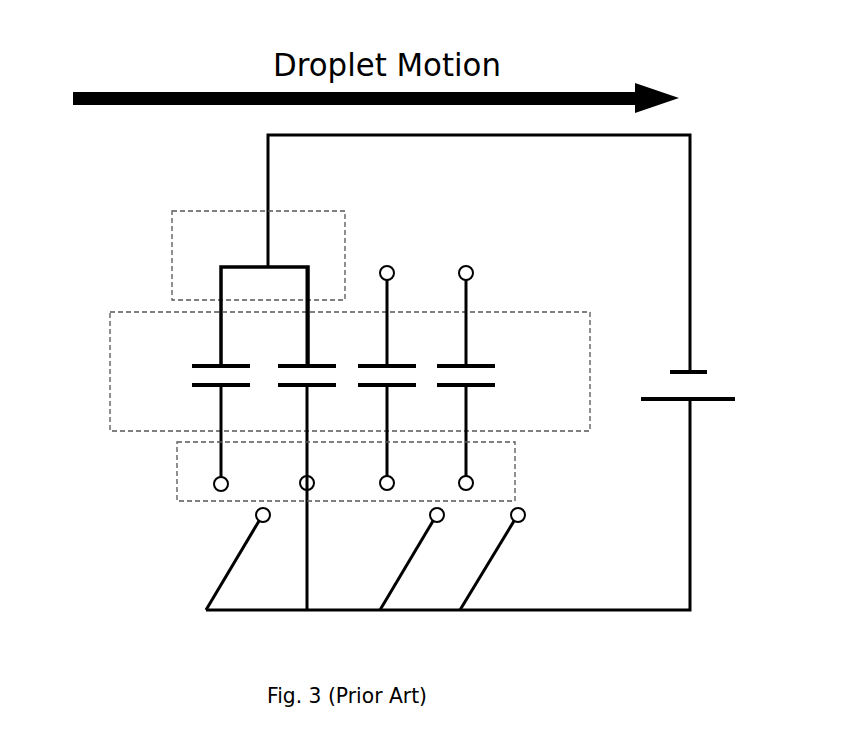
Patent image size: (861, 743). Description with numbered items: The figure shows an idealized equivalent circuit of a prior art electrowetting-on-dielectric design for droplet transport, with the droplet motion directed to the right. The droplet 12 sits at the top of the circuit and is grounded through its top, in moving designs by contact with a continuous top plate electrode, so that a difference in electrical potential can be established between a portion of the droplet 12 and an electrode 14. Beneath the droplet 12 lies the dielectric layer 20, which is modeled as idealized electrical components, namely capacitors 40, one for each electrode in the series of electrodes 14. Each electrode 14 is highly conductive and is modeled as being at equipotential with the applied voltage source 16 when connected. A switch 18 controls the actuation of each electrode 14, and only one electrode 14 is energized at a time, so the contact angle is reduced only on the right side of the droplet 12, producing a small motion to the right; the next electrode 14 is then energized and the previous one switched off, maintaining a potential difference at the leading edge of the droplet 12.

The droplet 12 is at (192, 218).
The dielectric layer 20 is at (122, 347).
The capacitors 40 is at (248, 365).
The electrodes 14 is at (192, 460).
The switch 18 is at (188, 564).
The voltage source 16 is at (736, 378).